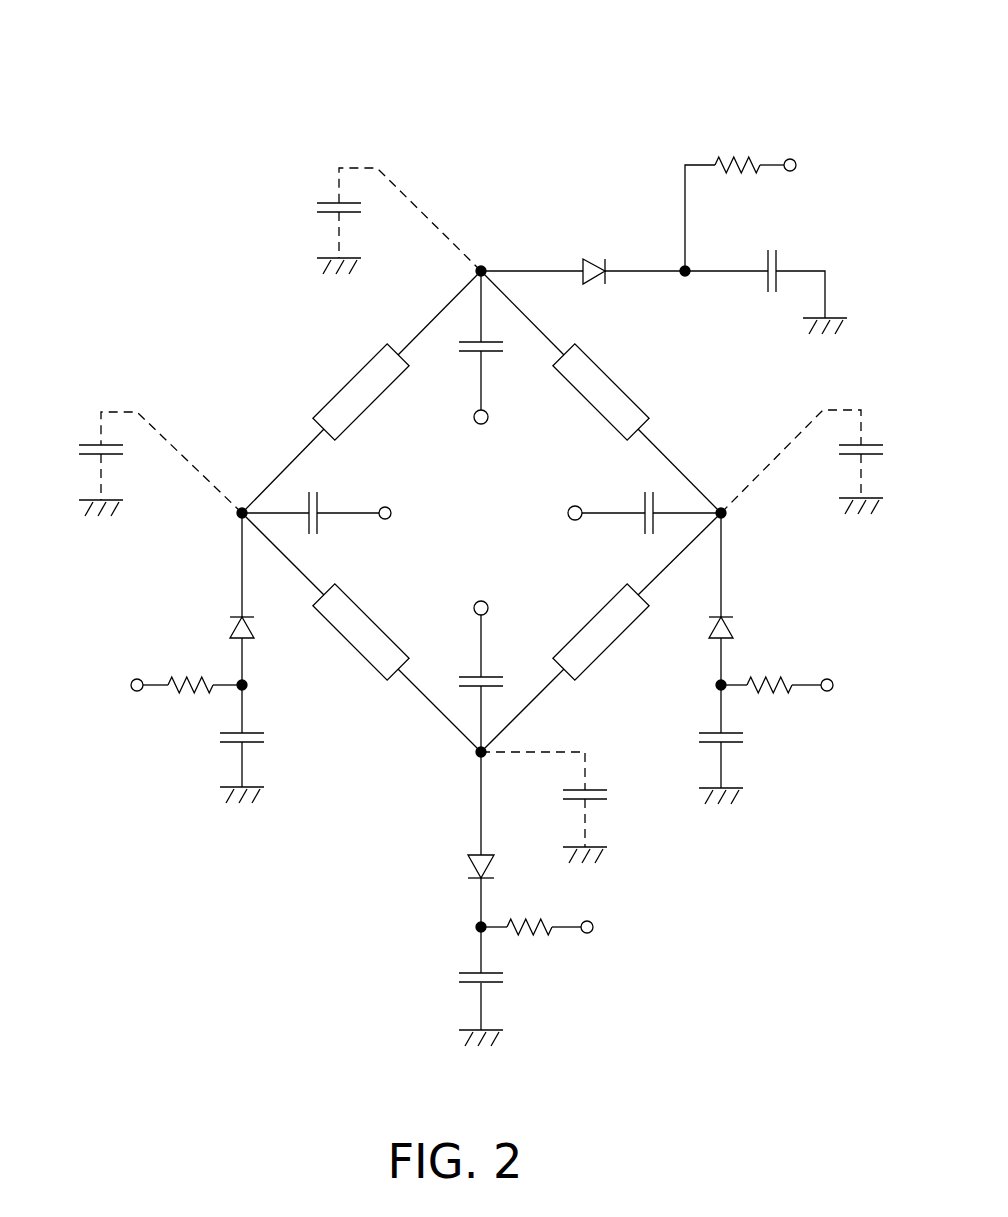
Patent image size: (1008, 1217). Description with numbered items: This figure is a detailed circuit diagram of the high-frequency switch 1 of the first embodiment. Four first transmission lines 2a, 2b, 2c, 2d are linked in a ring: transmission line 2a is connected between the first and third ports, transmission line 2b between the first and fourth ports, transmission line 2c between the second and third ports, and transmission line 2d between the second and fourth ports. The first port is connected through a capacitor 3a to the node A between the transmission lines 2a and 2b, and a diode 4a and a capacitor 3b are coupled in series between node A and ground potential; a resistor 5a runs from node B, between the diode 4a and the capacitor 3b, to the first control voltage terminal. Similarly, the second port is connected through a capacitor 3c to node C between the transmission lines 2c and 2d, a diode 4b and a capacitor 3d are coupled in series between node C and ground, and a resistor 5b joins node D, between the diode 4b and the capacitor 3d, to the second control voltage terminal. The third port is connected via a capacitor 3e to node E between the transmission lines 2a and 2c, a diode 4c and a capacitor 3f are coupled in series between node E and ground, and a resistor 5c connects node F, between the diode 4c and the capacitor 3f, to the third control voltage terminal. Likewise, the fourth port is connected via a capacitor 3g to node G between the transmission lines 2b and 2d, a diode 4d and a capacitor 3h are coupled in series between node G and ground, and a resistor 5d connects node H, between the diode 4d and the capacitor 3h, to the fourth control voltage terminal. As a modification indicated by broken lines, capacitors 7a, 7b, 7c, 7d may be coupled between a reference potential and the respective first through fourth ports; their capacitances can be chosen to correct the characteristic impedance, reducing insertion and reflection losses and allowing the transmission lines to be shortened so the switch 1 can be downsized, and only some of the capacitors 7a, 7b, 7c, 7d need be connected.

The high-frequency switch 1 is at (294, 136).
The first transmission line 2a is at (361, 392).
The first transmission line 2b is at (361, 632).
The first transmission line 2c is at (601, 392).
The first transmission line 2d is at (601, 632).
The capacitor 3a is at (336, 506).
The capacitor 3b is at (261, 744).
The capacitor 3c is at (625, 506).
The capacitor 3d is at (703, 744).
The capacitor 3e is at (489, 364).
The capacitor 3f is at (766, 292).
The capacitor 3g is at (490, 659).
The capacitor 3h is at (463, 986).
The diode 4a is at (220, 599).
The diode 4b is at (742, 599).
The diode 4c is at (583, 255).
The diode 4d is at (458, 839).
The resistor 5a is at (160, 702).
The resistor 5b is at (807, 702).
The resistor 5c is at (772, 196).
The resistor 5d is at (567, 944).
The capacitor 7a is at (142, 464).
The capacitor 7b is at (820, 462).
The capacitor 7c is at (381, 221).
The capacitor 7d is at (563, 807).